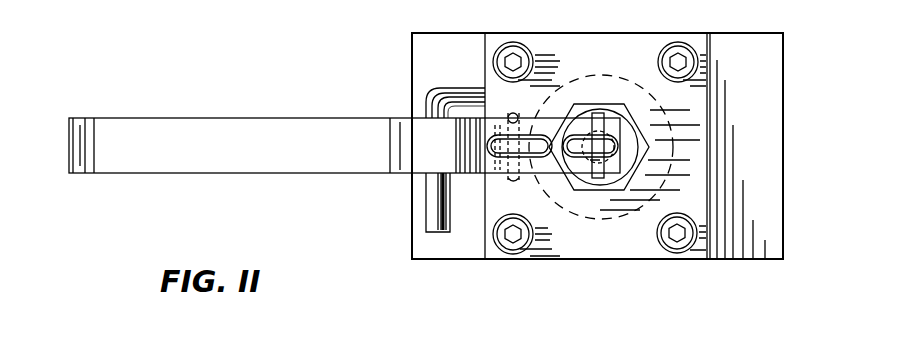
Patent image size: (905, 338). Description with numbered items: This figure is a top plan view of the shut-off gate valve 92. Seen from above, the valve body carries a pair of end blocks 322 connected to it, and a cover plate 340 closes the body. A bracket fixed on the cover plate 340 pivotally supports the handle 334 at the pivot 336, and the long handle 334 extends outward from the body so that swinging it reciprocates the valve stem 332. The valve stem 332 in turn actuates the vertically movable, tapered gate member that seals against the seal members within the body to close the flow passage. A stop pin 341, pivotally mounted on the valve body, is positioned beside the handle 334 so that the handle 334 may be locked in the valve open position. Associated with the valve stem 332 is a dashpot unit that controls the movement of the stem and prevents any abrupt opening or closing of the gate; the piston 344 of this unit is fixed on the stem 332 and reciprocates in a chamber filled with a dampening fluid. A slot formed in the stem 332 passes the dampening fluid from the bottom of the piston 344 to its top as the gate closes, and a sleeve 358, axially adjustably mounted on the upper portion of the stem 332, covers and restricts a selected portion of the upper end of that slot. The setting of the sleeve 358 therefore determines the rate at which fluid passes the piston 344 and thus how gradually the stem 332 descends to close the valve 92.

The shut-off gate valve 92 is at (690, 261).
The end blocks 322 is at (424, 254).
The valve stem 332 is at (614, 145).
The handle 334 is at (305, 125).
The pivot 336 is at (505, 142).
The cover plate 340 is at (570, 259).
The stop pin 341 is at (435, 102).
The piston 344 is at (648, 210).
The sleeve 358 is at (602, 190).